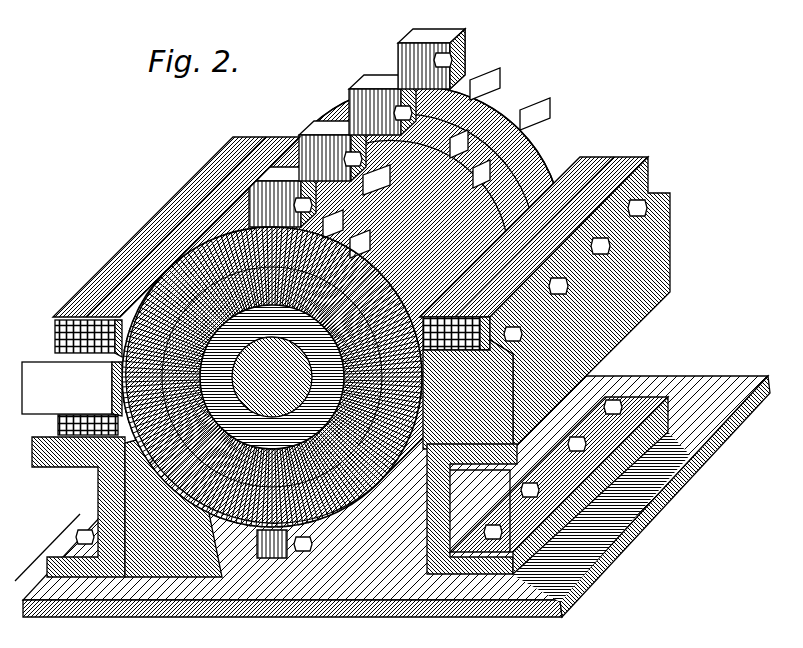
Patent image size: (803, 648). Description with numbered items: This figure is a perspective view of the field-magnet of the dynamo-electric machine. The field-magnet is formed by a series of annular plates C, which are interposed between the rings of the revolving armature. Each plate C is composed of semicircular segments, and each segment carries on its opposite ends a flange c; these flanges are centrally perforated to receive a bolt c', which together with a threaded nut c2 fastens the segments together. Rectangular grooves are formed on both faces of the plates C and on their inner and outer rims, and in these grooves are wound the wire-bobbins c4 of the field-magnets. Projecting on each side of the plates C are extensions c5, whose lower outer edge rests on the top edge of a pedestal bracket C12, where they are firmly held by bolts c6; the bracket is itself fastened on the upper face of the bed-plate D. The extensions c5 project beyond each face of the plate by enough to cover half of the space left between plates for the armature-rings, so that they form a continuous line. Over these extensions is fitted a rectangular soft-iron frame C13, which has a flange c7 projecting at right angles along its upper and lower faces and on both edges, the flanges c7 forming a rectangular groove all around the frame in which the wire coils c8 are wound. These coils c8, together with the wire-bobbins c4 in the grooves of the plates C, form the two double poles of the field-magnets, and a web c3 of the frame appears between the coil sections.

The annular plate C is at (518, 98).
The flange c is at (340, 328).
The bolt c' is at (385, 337).
The threaded nut c2 is at (452, 50).
The frame web c3 is at (496, 475).
The wire-bobbin c4 is at (352, 620).
The extension c5 is at (683, 232).
The bolt c6 is at (648, 208).
The flange c7 is at (240, 132).
The wire coil c8 is at (266, 138).
The frame bracket C12 is at (60, 467).
The frame upper block C13 is at (650, 178).
The bed-plate D is at (606, 568).